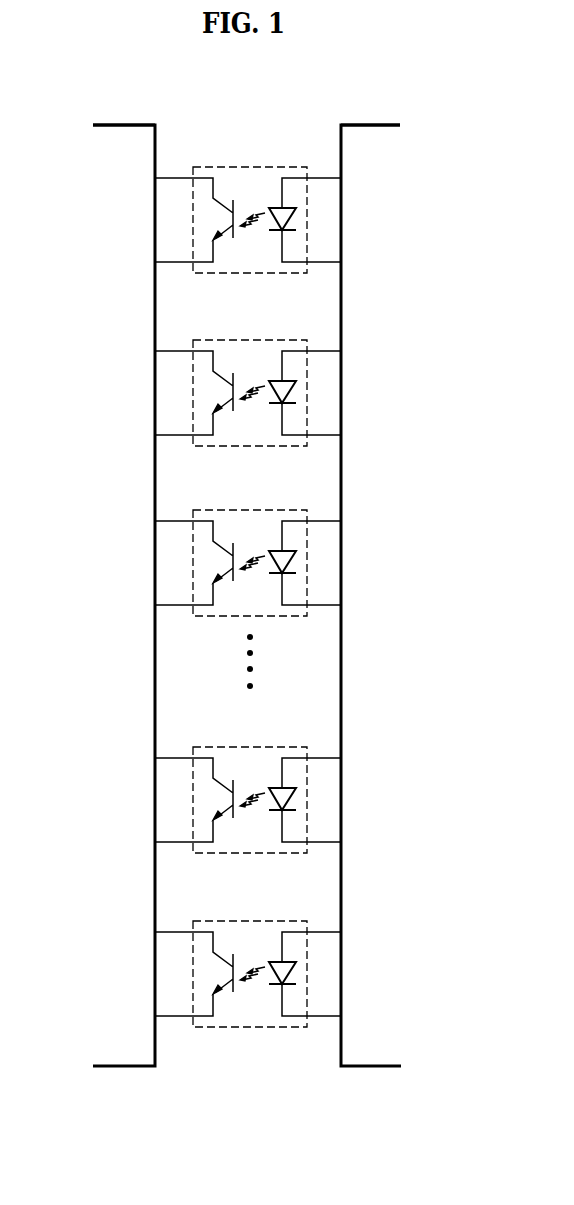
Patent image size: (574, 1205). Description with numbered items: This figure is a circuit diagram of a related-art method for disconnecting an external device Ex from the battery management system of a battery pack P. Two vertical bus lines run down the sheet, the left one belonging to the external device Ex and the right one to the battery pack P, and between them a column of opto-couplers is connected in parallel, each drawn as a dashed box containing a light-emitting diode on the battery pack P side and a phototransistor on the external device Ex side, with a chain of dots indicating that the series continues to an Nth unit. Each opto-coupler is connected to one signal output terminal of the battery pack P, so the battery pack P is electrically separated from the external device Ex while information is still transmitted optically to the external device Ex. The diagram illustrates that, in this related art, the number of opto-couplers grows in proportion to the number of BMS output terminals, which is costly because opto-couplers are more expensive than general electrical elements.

The external device Ex is at (130, 130).
The battery pack P is at (371, 132).